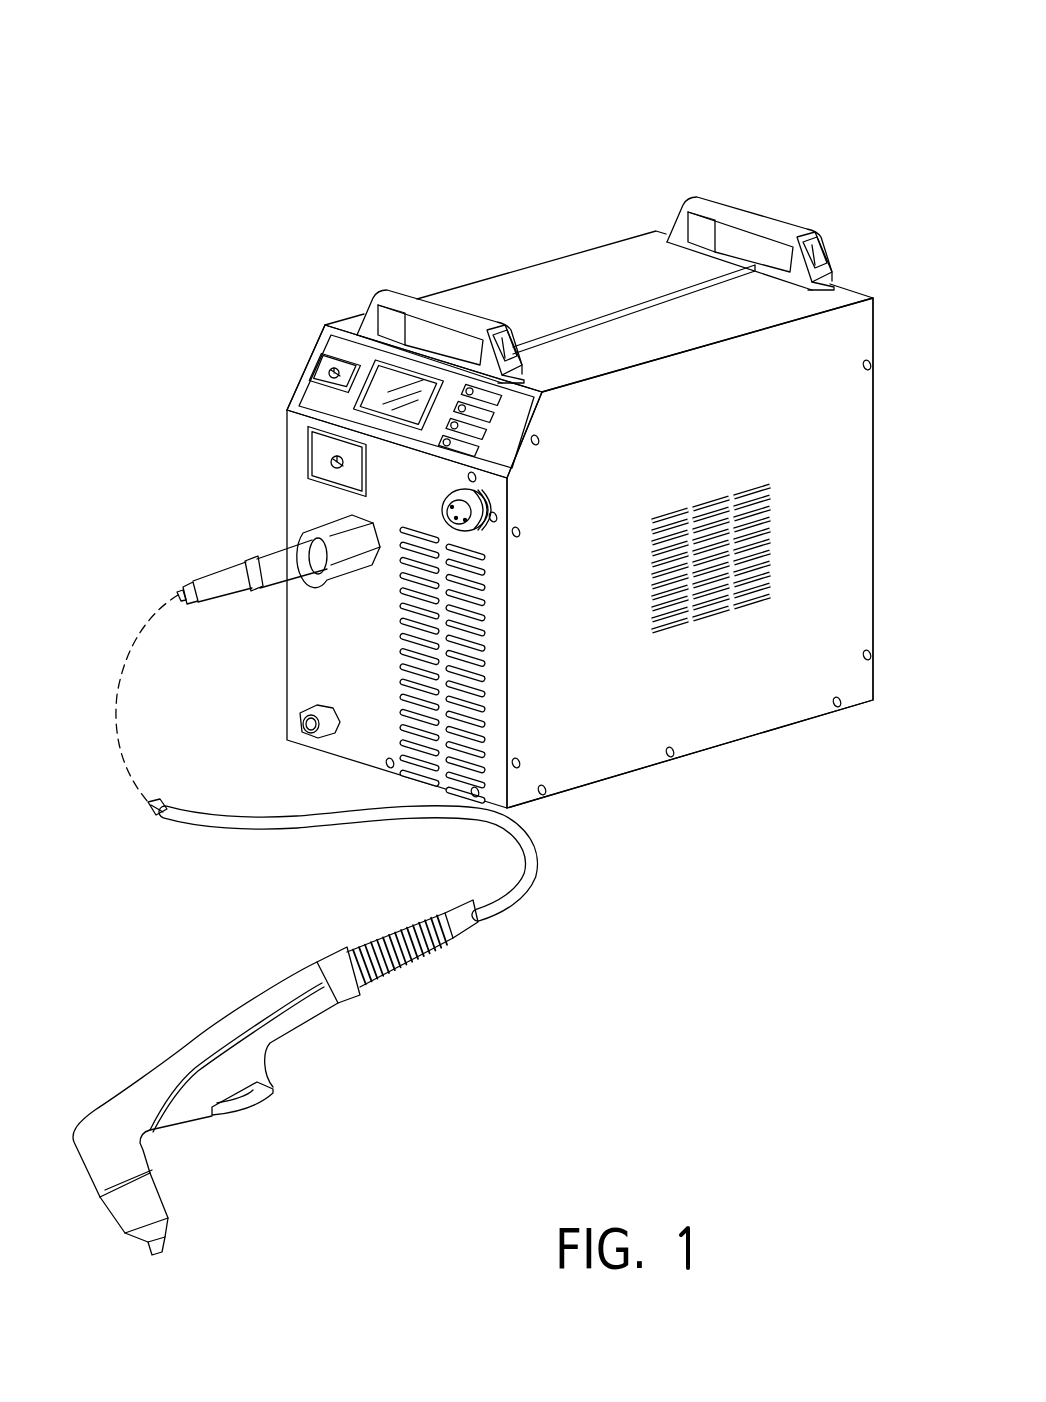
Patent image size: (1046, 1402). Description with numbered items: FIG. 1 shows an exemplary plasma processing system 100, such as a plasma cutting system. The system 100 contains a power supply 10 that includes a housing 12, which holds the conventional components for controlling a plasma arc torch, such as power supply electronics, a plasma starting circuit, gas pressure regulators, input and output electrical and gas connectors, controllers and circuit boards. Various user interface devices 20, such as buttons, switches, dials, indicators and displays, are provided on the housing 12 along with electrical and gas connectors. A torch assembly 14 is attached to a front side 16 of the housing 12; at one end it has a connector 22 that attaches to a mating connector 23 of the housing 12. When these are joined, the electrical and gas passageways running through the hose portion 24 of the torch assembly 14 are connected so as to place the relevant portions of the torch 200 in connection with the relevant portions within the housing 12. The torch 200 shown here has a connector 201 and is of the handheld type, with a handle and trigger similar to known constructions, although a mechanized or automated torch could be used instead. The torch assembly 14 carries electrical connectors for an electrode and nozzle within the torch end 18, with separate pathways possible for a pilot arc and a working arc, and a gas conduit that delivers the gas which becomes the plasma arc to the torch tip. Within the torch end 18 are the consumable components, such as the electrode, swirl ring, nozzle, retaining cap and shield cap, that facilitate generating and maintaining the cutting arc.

The plasma processing system 100 is at (779, 105).
The power supply 10 is at (414, 280).
The housing 12 is at (570, 264).
The torch assembly 14 is at (123, 583).
The front side 16 is at (500, 622).
The torch end 18 is at (147, 1290).
The user interface devices 20 is at (283, 370).
The connector 22 is at (350, 567).
The mating connector 23 is at (482, 502).
The hose portion 24 is at (298, 822).
The torch 200 is at (290, 1118).
The connector 201 is at (350, 988).